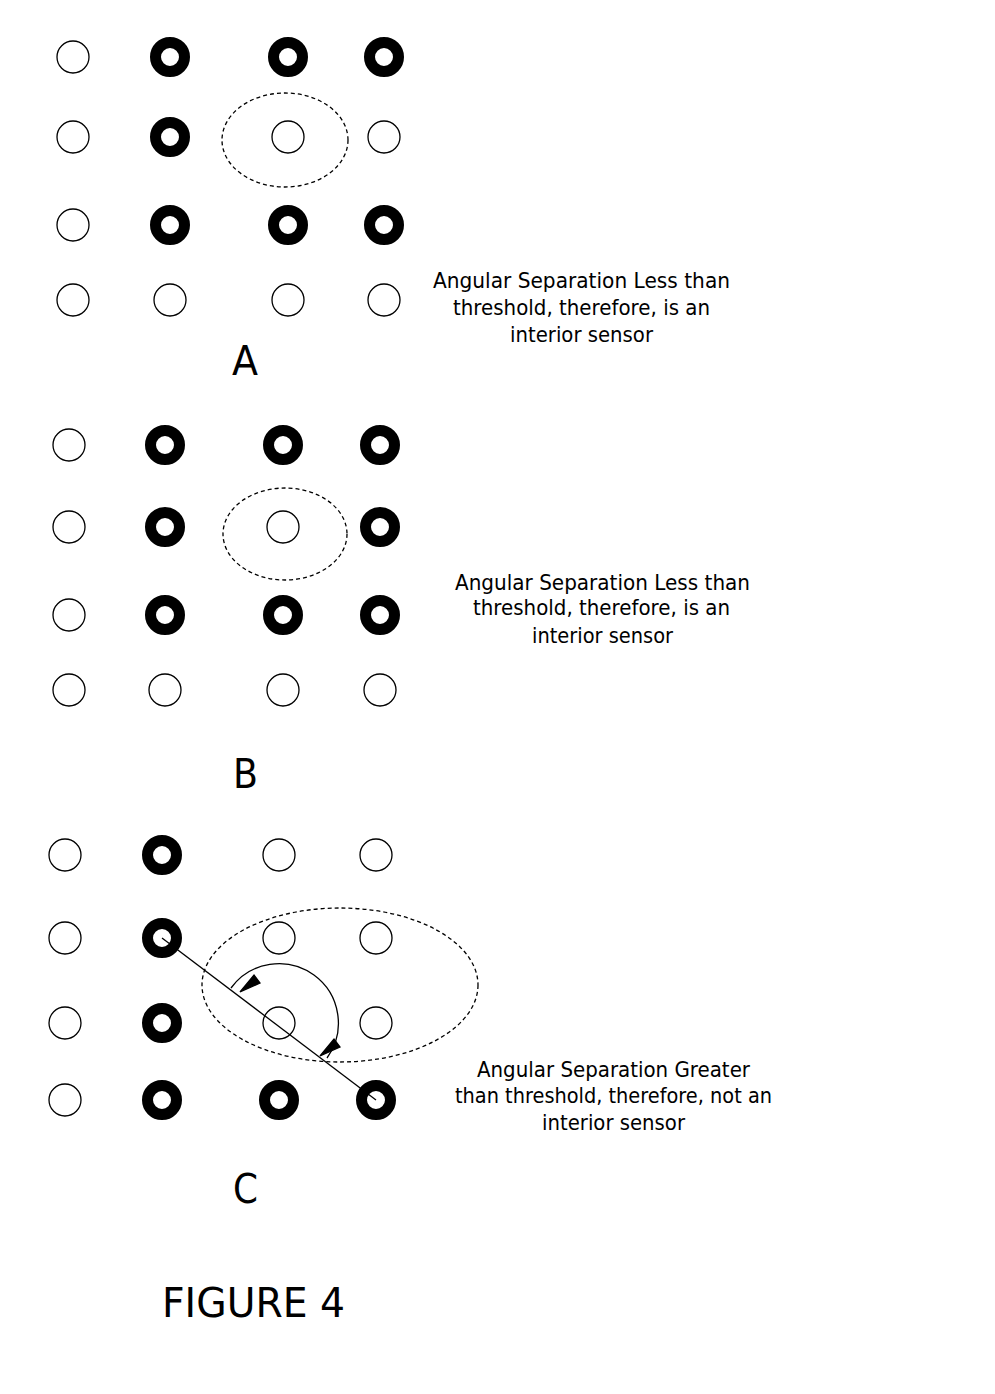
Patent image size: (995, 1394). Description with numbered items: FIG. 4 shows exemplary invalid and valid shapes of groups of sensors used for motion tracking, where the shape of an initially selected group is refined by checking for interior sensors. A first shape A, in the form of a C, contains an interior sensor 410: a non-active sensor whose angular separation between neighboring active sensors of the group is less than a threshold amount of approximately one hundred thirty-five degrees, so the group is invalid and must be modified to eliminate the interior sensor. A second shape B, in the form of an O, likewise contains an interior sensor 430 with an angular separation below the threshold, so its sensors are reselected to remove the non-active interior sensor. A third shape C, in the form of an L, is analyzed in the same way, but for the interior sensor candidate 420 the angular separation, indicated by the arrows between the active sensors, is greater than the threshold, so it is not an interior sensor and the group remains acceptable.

The interior sensor 410 is at (295, 128).
The interior sensor 430 is at (287, 525).
The interior sensor candidate 420 is at (280, 1022).